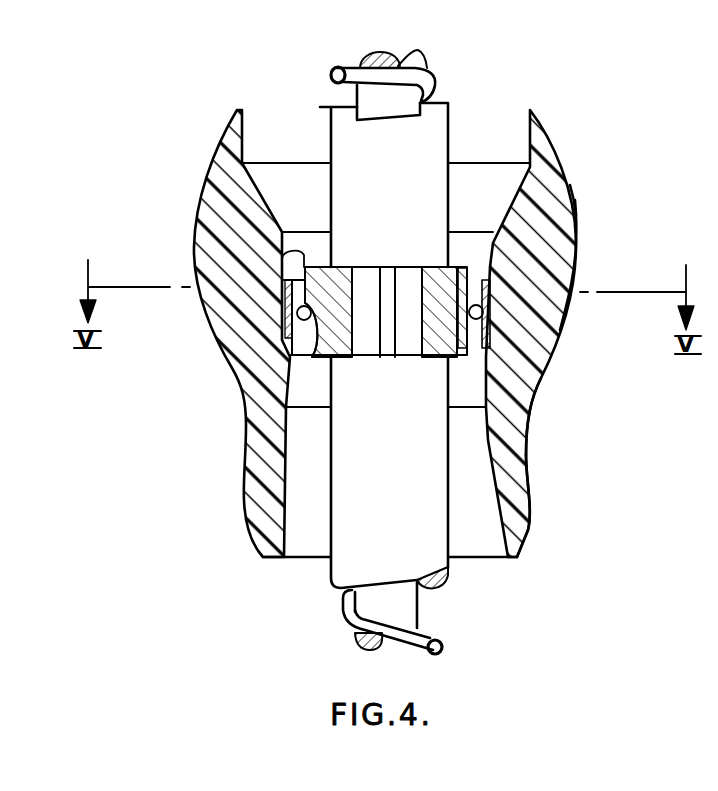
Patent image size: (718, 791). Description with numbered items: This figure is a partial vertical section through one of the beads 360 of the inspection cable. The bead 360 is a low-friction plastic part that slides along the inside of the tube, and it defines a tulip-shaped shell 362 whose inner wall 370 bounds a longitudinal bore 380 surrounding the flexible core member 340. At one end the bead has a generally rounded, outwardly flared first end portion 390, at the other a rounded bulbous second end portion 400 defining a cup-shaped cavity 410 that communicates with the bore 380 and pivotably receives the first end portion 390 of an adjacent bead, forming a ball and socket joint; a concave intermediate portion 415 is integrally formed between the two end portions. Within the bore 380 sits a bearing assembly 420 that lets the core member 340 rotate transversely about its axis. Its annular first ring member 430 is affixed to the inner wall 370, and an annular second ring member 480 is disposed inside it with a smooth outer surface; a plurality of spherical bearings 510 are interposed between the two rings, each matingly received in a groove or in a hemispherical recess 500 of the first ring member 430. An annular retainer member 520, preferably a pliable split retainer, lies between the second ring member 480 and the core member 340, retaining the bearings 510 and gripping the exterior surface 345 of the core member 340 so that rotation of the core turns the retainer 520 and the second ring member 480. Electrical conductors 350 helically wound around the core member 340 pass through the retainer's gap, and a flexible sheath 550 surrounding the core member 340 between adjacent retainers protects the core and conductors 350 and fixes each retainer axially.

The core member 340 is at (427, 62).
The exterior surface 345 is at (436, 70).
The electrical conductors 350 is at (430, 633).
The bead 360 is at (576, 193).
The tulip-shaped shell 362 is at (578, 205).
The inner wall 370 is at (490, 243).
The longitudinal bore 380 is at (571, 270).
The first end portion 390 is at (520, 510).
The second end portion 400 is at (539, 142).
The cup-shaped cavity 410 is at (522, 153).
The concave intermediate portion 415 is at (522, 422).
The bearing assembly 420 is at (649, 324).
The first ring member 430 is at (490, 330).
The second ring member 480 is at (515, 393).
The hemispherical recesses 500 is at (300, 344).
The spherical bearings 510 is at (290, 312).
The retainer member 520 is at (285, 252).
The sheath 550 is at (353, 145).